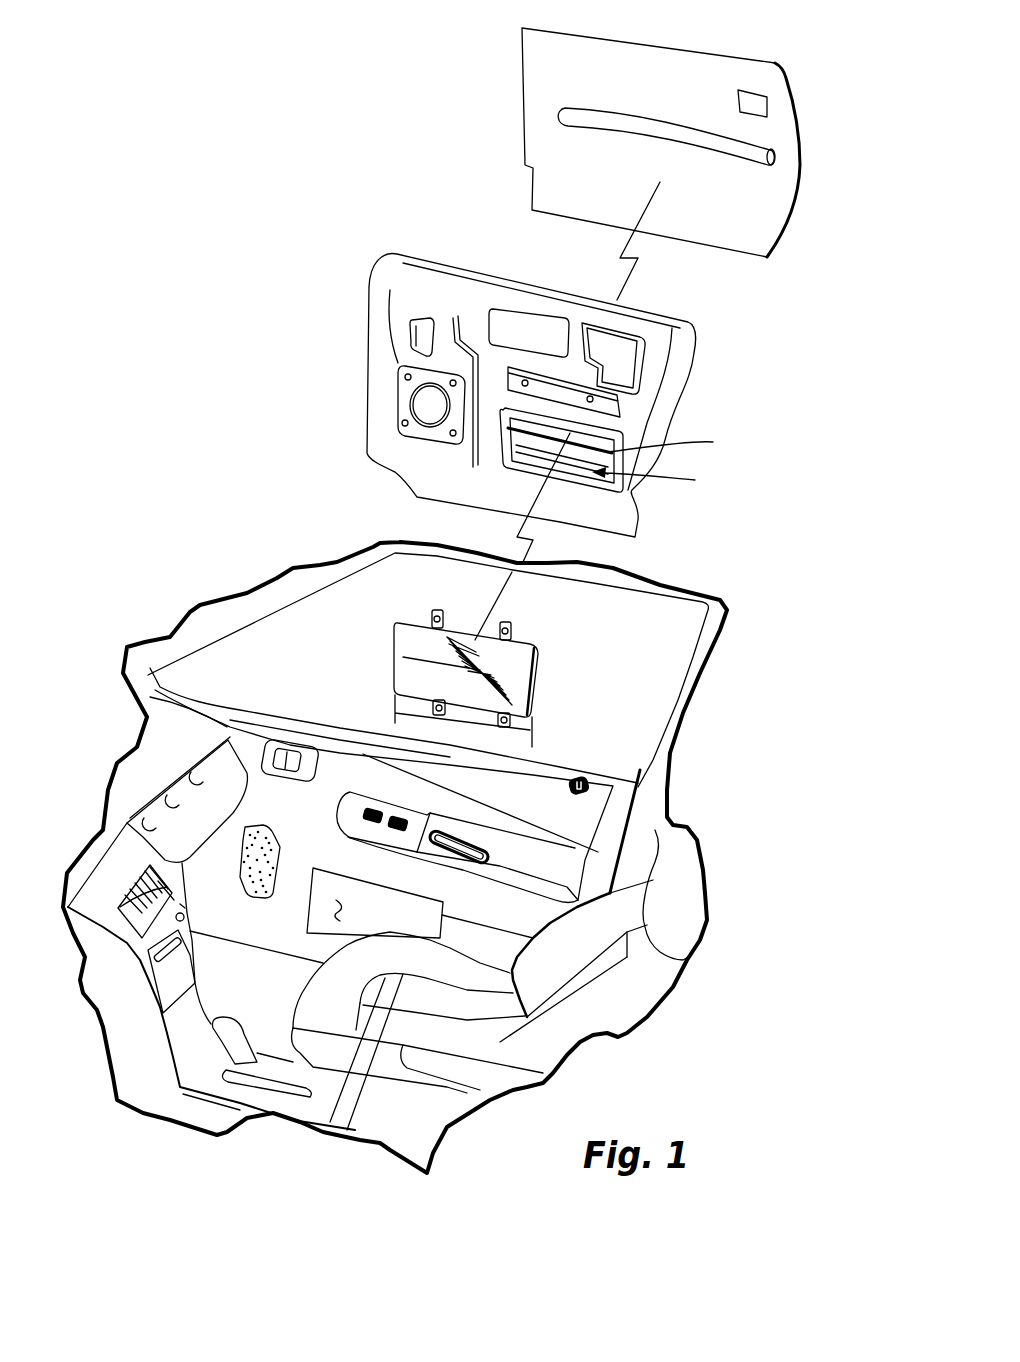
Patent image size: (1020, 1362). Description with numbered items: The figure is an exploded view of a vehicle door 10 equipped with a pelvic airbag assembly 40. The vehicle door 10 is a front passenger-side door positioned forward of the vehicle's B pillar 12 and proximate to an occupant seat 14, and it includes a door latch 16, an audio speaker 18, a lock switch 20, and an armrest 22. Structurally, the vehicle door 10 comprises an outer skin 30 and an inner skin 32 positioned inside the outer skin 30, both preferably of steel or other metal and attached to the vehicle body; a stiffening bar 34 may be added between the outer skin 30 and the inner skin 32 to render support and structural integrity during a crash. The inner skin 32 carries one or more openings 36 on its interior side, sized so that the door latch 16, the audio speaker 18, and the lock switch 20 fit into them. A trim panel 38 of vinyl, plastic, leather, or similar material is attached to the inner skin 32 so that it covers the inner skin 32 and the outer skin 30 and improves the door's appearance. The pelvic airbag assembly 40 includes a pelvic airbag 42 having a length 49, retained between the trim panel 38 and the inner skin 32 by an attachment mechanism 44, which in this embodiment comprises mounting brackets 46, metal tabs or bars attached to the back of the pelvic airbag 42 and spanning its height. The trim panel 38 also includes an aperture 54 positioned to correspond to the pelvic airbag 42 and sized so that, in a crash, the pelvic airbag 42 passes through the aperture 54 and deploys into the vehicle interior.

The vehicle door 10 is at (348, 379).
The B pillar 12 is at (447, 746).
The occupant seat 14 is at (372, 1037).
The door latch 16 is at (298, 747).
The audio speaker 18 is at (252, 867).
The lock switch 20 is at (580, 777).
The armrest 22 is at (517, 855).
The outer skin 30 is at (770, 143).
The inner skin 32 is at (652, 368).
The stiffening bar 34 is at (618, 118).
The openings 36 is at (425, 333).
The trim panel 38 is at (313, 798).
The pelvic airbag assembly 40 is at (486, 659).
The pelvic airbag 42 is at (527, 687).
The attachment mechanism 44 is at (437, 600).
The mounting brackets 46 is at (430, 625).
The length 49 is at (465, 675).
The aperture 54 is at (325, 915).